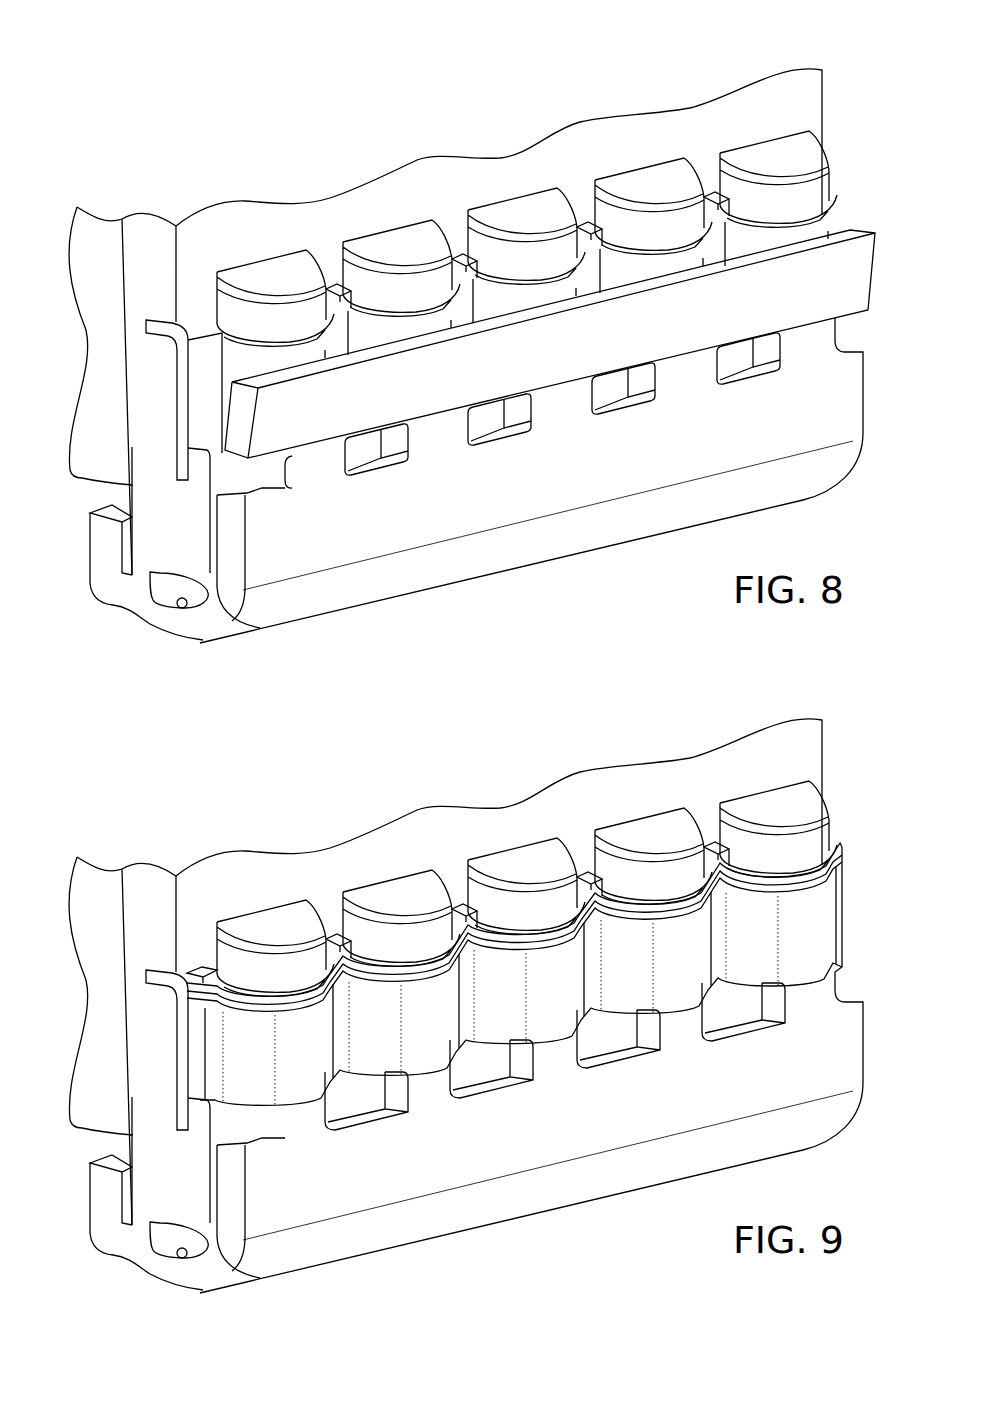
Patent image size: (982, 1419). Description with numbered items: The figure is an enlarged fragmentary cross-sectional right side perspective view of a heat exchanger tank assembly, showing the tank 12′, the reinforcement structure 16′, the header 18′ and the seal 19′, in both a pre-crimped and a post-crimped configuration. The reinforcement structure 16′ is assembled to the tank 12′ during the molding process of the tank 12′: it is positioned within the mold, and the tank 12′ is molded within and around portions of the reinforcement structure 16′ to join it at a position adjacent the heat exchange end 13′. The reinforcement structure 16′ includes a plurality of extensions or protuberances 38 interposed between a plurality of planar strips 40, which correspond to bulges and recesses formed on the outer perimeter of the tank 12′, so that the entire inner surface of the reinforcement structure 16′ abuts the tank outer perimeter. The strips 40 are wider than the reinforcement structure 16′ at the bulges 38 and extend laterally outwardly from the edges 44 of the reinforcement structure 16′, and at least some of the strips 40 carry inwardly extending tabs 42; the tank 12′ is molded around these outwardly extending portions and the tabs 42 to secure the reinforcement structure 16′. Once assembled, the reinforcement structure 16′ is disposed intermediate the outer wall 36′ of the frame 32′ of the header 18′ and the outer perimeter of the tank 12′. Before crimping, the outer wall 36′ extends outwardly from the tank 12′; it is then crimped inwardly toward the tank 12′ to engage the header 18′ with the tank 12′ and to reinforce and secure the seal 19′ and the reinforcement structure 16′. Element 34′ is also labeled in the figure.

In FIG. 8, the tank 12′ is at (183, 534).
In FIG. 9, the tank 12′ is at (171, 1161).
In FIG. 8, the heat exchange end 13′ is at (160, 572).
In FIG. 9, the heat exchange end 13′ is at (146, 1256).
In FIG. 8, the reinforcement structure 16′ is at (820, 228).
In FIG. 9, the reinforcement structure 16′ is at (523, 765).
In FIG. 8, the header 18′ is at (516, 492).
In FIG. 9, the header 18′ is at (531, 1130).
In FIG. 8, the seal 19′ is at (198, 592).
In FIG. 9, the seal 19′ is at (179, 1289).
In FIG. 8, the frame 32′ is at (857, 265).
In FIG. 9, the frame 32′ is at (542, 901).
In FIG. 8, the pivot bump 34′ is at (185, 603).
In FIG. 9, the pivot bump 34′ is at (163, 1320).
In FIG. 8, the outer wall 36′ is at (338, 540).
In FIG. 9, the outer wall 36′ is at (548, 1209).
In FIG. 8, the protuberances 38 is at (283, 353).
In FIG. 9, the protuberances 38 is at (527, 892).
In FIG. 8, the planar strips 40 is at (467, 307).
In FIG. 9, the planar strips 40 is at (458, 860).
In FIG. 8, the tabs 42 is at (160, 318).
In FIG. 9, the tabs 42 is at (97, 1041).
In FIG. 8, the edges 44 is at (187, 472).
In FIG. 9, the edges 44 is at (132, 974).